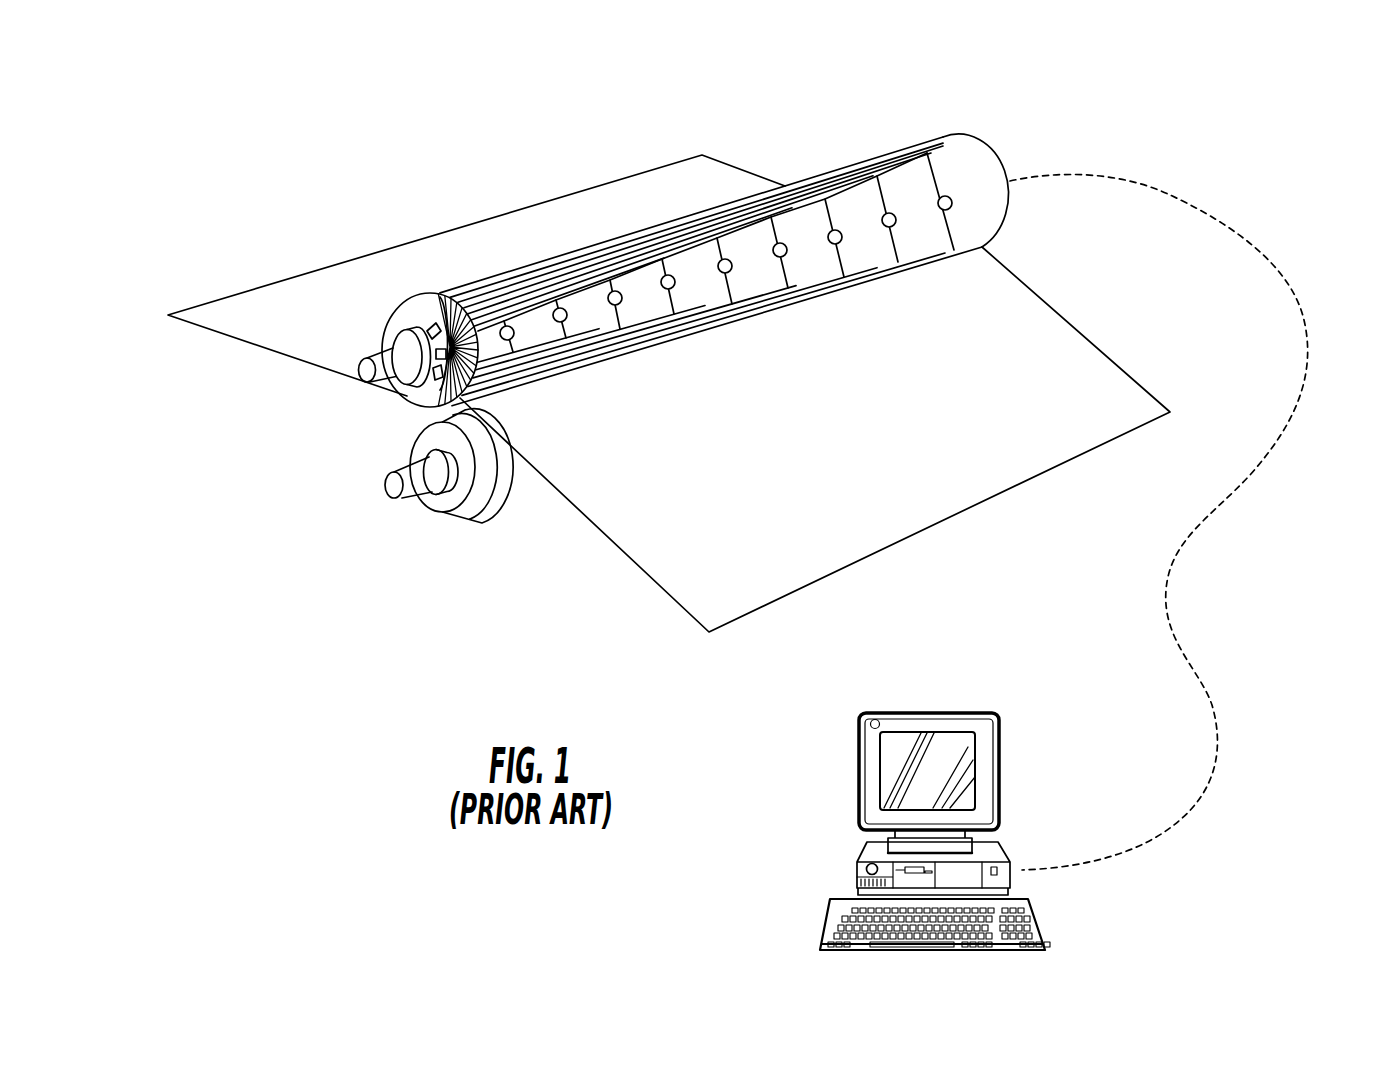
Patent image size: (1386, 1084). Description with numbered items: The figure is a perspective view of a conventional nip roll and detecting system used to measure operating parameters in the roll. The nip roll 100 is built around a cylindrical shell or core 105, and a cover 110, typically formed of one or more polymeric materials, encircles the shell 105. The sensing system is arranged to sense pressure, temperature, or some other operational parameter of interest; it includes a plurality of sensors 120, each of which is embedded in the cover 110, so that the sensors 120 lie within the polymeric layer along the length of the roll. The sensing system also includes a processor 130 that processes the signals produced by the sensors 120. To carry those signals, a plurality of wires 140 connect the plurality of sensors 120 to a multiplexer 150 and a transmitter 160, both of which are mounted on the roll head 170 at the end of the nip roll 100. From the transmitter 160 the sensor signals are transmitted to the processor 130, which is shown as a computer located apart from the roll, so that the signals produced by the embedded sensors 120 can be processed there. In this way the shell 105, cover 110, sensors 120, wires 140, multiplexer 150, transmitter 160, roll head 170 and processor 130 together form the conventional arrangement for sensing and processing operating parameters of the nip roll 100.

The nip roll 100 is at (973, 137).
The cylindrical shell or core 105 is at (392, 338).
The cover 110 is at (423, 298).
The sensors 120 is at (985, 250).
The processor 130 is at (855, 868).
The wires 140 is at (880, 146).
The multiplexer 150 is at (405, 352).
The transmitter 160 is at (440, 397).
The roll head 170 is at (372, 356).